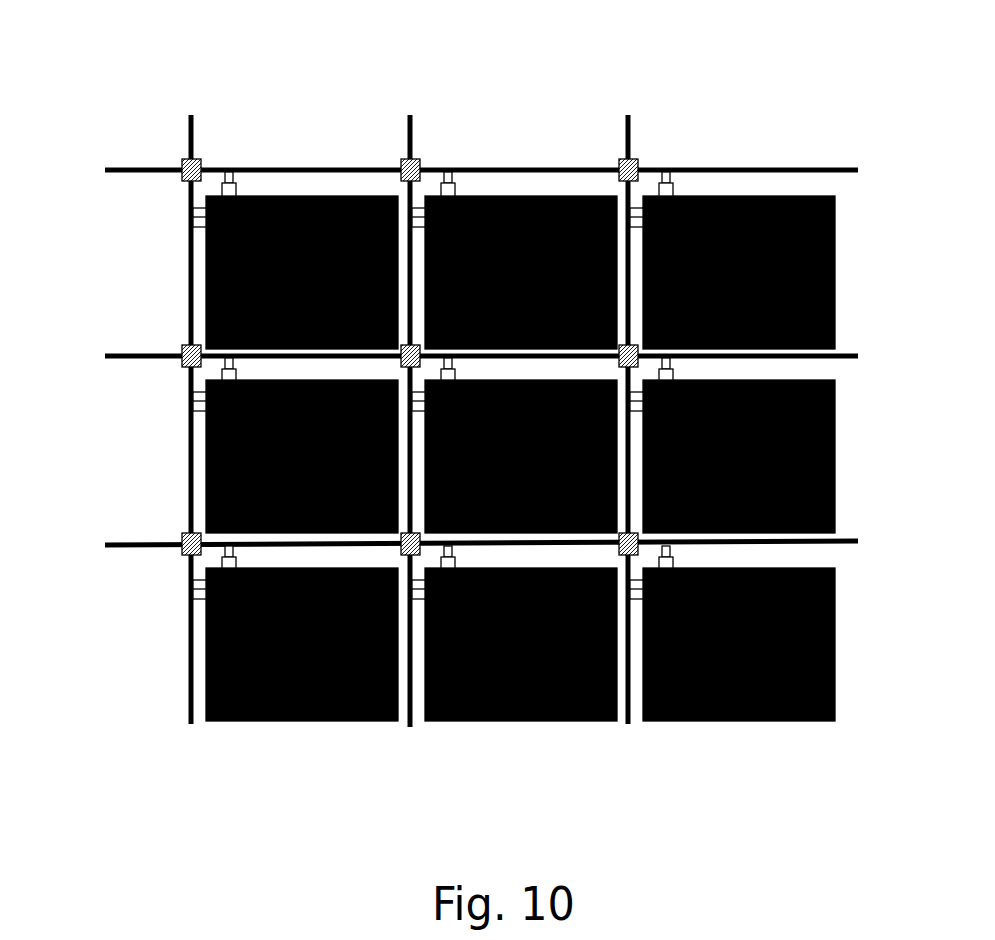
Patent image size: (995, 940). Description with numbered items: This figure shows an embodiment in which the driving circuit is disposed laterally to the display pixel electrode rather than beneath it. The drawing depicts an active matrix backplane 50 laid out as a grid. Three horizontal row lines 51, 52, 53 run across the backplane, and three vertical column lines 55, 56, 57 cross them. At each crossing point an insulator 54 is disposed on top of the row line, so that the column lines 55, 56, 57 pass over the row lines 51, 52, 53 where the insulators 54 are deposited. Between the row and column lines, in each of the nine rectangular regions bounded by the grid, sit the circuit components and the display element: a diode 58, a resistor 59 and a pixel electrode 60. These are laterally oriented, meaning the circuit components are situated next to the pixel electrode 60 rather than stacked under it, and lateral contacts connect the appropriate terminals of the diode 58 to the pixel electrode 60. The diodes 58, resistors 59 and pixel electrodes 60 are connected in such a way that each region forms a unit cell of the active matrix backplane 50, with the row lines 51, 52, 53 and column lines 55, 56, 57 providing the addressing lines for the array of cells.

The active matrix backplane 50 is at (462, 410).
The row line 51 is at (434, 178).
The row line 52 is at (435, 353).
The row line 53 is at (435, 542).
The insulator 54 is at (637, 155).
The column line 55 is at (193, 389).
The column line 56 is at (411, 391).
The column line 57 is at (631, 388).
The diode 58 is at (187, 592).
The resistor 59 is at (675, 551).
The pixel electrode 60 is at (462, 738).